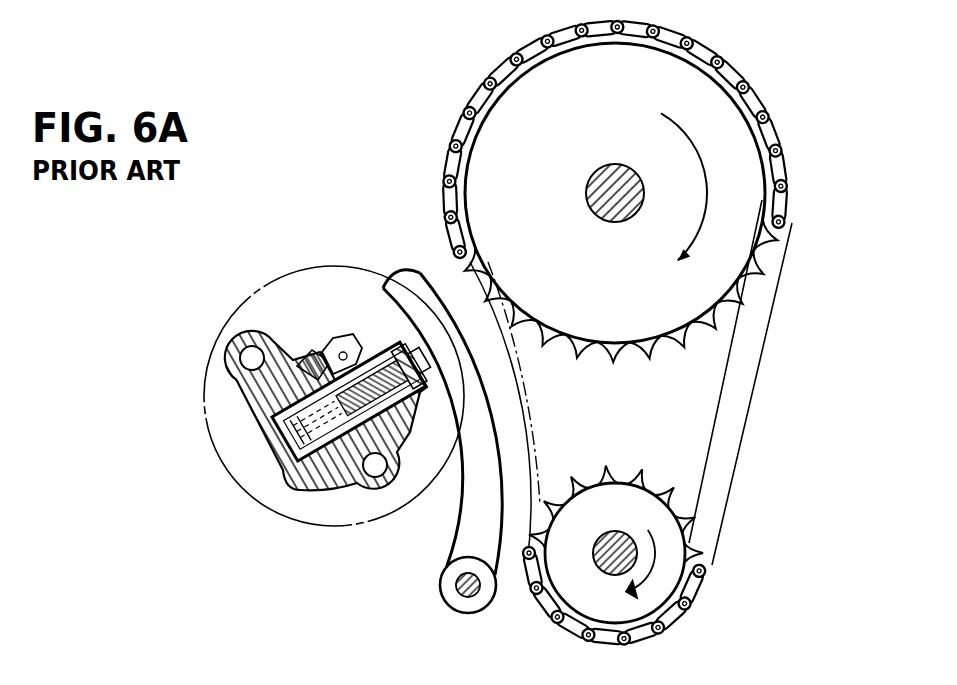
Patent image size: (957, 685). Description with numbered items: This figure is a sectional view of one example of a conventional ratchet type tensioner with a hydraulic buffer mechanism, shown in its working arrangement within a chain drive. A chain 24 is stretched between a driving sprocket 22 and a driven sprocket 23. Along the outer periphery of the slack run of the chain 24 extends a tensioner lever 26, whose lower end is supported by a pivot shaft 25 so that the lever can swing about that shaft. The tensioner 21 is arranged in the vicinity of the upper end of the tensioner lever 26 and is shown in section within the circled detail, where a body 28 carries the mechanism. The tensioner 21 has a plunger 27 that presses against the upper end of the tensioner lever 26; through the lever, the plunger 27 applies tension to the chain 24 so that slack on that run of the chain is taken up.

The tensioner 21 is at (294, 396).
The driving sprocket 22 is at (670, 580).
The driven sprocket 23 is at (735, 145).
The chain 24 is at (772, 116).
The pivot shaft 25 is at (470, 590).
The tensioner lever 26 is at (410, 281).
The plunger 27 is at (413, 408).
The tensioner body 28 is at (243, 393).